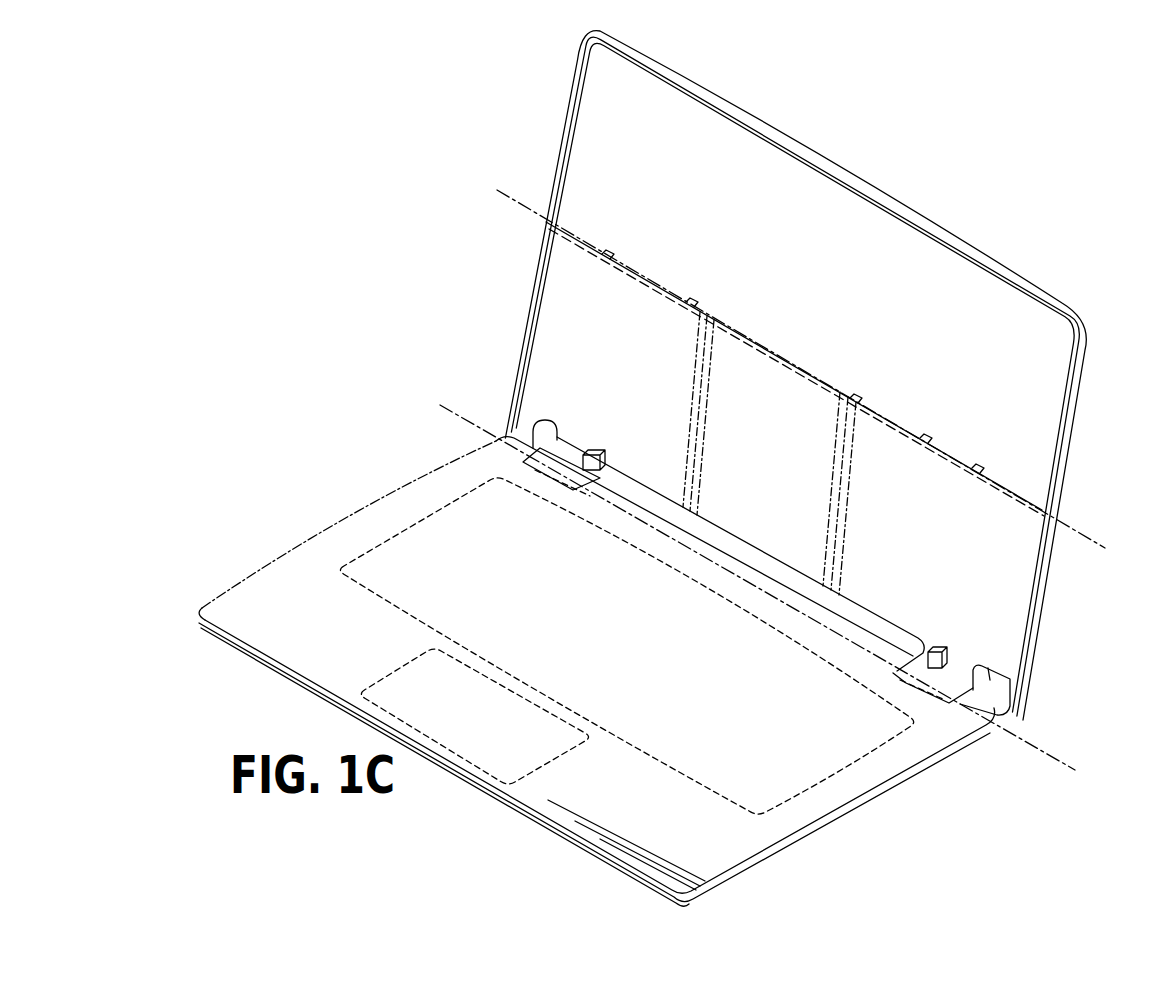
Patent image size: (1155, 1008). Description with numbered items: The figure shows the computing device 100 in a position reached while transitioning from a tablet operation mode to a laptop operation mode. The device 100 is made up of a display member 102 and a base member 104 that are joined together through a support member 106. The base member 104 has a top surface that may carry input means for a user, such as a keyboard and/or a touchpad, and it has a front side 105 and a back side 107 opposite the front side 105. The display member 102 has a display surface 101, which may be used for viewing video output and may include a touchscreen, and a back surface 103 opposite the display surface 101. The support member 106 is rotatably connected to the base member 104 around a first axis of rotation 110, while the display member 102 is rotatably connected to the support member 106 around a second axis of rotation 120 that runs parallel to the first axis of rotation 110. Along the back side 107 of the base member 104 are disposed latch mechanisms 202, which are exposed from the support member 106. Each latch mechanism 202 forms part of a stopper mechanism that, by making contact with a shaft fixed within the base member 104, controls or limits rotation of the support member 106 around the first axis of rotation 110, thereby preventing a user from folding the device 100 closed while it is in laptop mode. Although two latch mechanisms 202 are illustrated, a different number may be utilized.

The computing device 100 is at (352, 274).
The display surface 101 is at (1070, 428).
The display member 102 is at (568, 118).
The back surface 103 is at (1012, 298).
The base member 104 is at (858, 808).
The front side 105 is at (291, 682).
The support member 106 is at (787, 360).
The back side 107 is at (548, 424).
The first axis of rotation 110 is at (1041, 752).
The second axis of rotation 120 is at (1083, 535).
The latch mechanism 202 is at (593, 455).